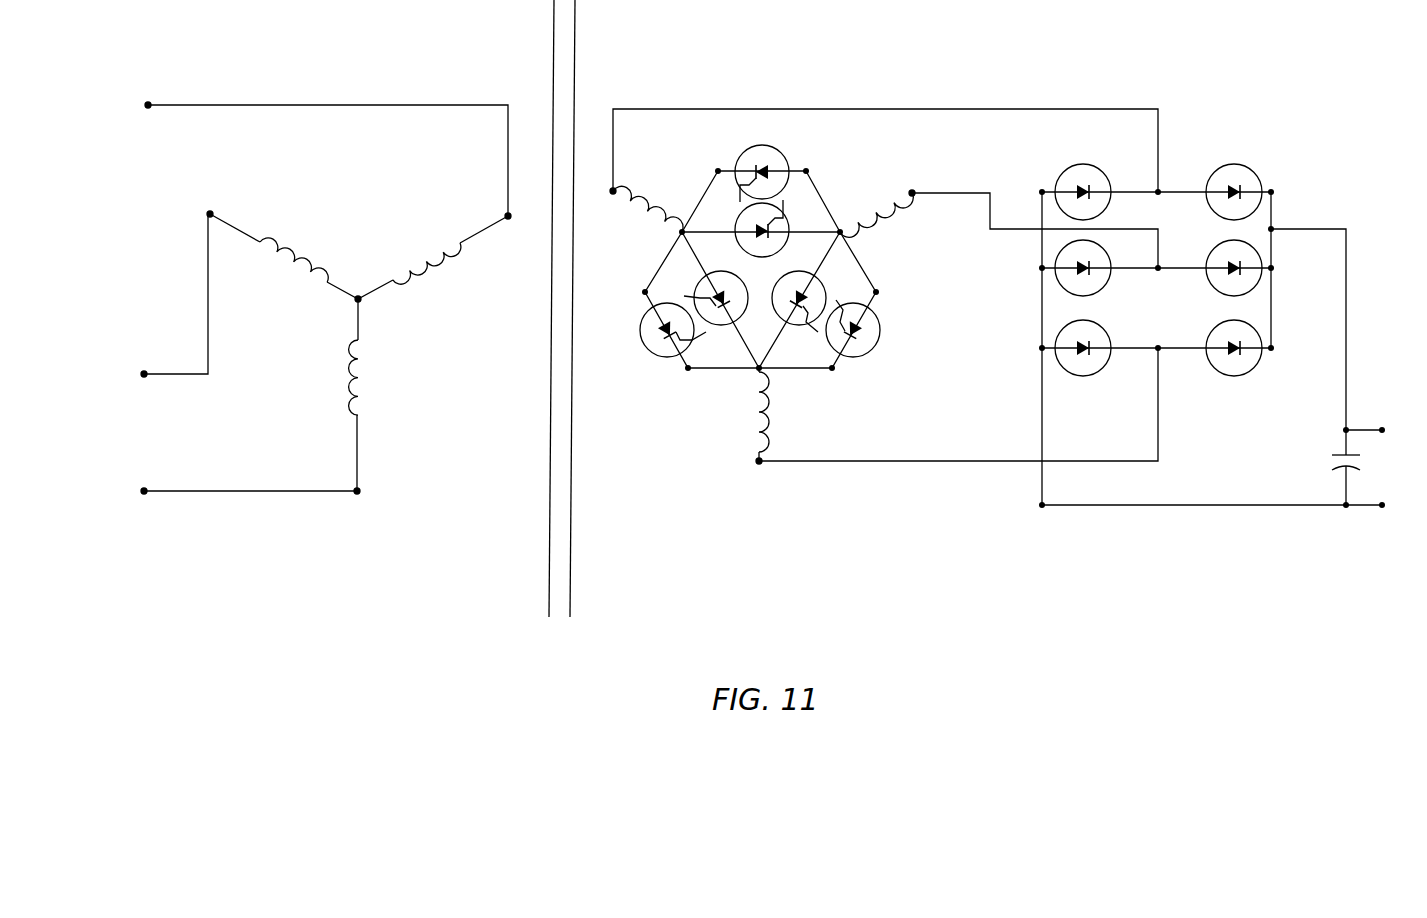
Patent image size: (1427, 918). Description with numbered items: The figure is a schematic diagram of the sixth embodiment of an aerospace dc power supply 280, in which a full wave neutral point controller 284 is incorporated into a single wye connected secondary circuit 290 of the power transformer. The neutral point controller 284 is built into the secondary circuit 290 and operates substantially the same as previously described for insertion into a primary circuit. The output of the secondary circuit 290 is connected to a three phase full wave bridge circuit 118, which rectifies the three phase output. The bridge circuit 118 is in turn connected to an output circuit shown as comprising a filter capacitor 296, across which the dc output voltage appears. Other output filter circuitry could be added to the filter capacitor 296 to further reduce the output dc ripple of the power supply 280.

The aerospace dc power supply 280 is at (366, 611).
The secondary circuit 290 is at (806, 90).
The full wave neutral point controller 284 is at (672, 410).
The three phase full wave bridge circuit 118 is at (1230, 148).
The filter capacitor 296 is at (1338, 470).